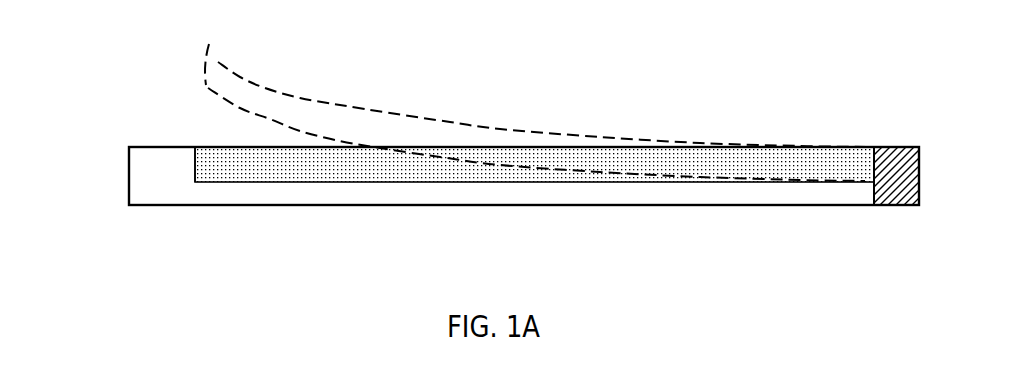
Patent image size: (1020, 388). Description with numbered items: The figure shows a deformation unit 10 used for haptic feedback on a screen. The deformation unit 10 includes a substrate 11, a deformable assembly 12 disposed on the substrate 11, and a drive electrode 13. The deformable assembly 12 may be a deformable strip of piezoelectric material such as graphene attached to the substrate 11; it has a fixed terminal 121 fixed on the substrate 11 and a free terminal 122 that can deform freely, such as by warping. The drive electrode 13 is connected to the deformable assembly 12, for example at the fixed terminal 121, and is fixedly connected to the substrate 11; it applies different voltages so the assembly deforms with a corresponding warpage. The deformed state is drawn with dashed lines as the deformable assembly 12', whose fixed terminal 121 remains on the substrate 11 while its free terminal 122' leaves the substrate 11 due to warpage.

The deformation unit 10 is at (600, 68).
The substrate 11 is at (148, 181).
The deformable assembly 12 is at (500, 190).
The fixed terminal 121 is at (858, 166).
The free terminal 122 is at (245, 217).
The deformable assembly after deformation 12' is at (537, 91).
The free terminal after deformation 122' is at (271, 43).
The drive electrode 13 is at (903, 162).